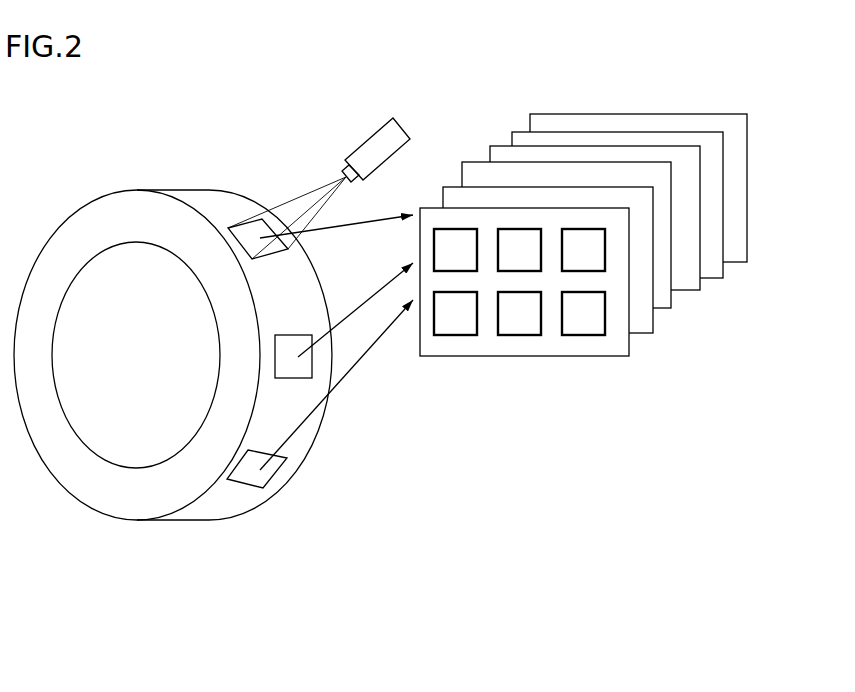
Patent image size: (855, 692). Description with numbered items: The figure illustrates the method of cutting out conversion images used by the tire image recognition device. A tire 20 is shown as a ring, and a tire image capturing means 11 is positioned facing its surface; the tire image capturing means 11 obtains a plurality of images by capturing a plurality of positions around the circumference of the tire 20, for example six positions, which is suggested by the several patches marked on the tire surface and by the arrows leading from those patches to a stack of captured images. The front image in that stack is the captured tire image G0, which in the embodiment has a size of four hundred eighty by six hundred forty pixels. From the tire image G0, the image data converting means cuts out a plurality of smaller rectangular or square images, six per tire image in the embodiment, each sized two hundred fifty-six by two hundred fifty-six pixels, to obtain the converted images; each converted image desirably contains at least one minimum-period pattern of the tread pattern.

The tire 20 is at (207, 190).
The tire image capturing means 11 is at (365, 142).
The tire image G0 is at (593, 345).